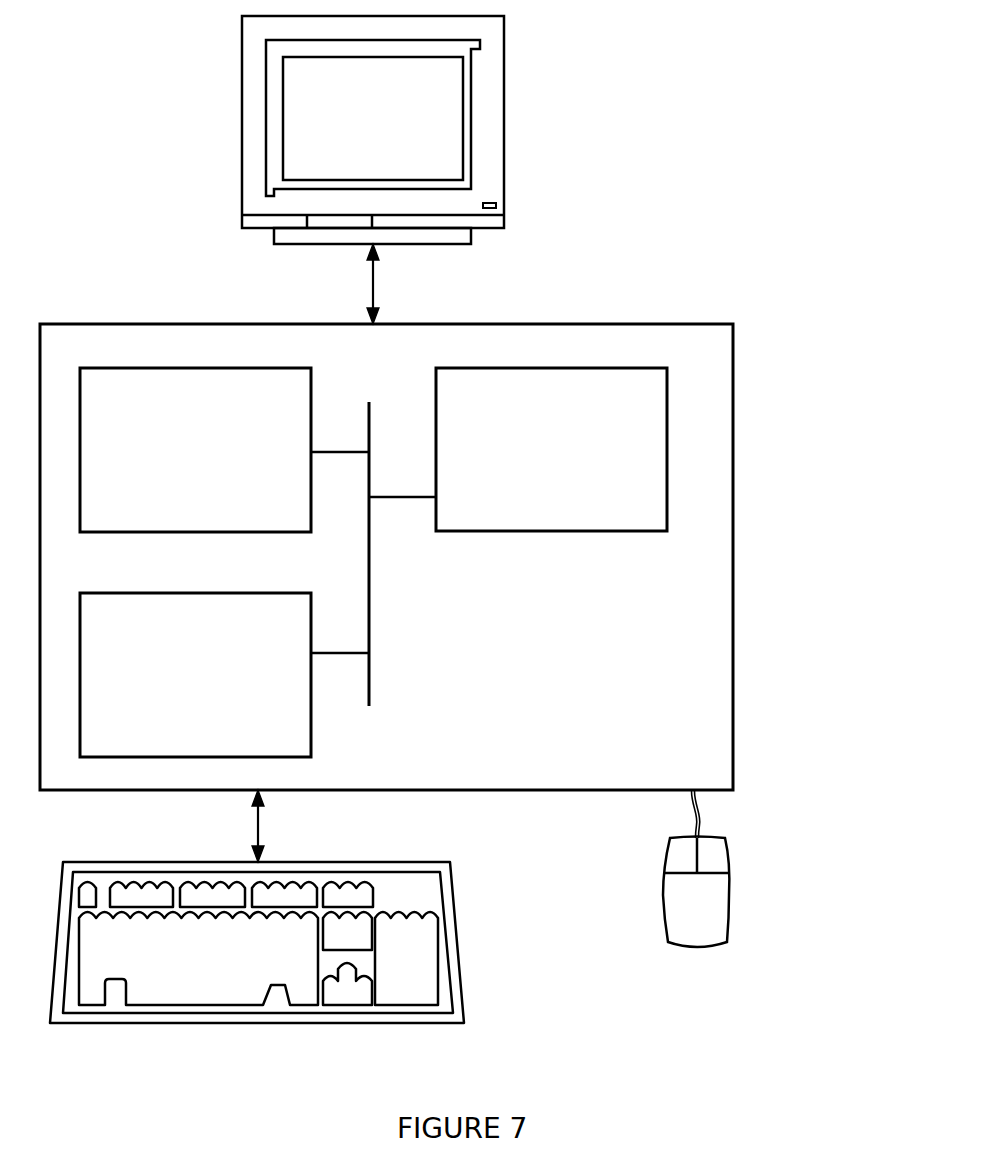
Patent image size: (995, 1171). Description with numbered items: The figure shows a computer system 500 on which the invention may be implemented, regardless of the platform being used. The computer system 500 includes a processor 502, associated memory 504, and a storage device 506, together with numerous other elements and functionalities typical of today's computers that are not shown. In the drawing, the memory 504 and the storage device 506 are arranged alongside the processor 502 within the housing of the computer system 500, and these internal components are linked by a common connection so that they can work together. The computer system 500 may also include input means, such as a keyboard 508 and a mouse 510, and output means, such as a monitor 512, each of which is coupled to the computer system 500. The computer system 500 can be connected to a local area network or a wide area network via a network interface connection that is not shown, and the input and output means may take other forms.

The computer system 500 is at (712, 148).
The processor 502 is at (530, 447).
The memory 504 is at (172, 450).
The storage device 506 is at (172, 672).
The keyboard 508 is at (172, 957).
The mouse 510 is at (737, 957).
The monitor 512 is at (345, 119).